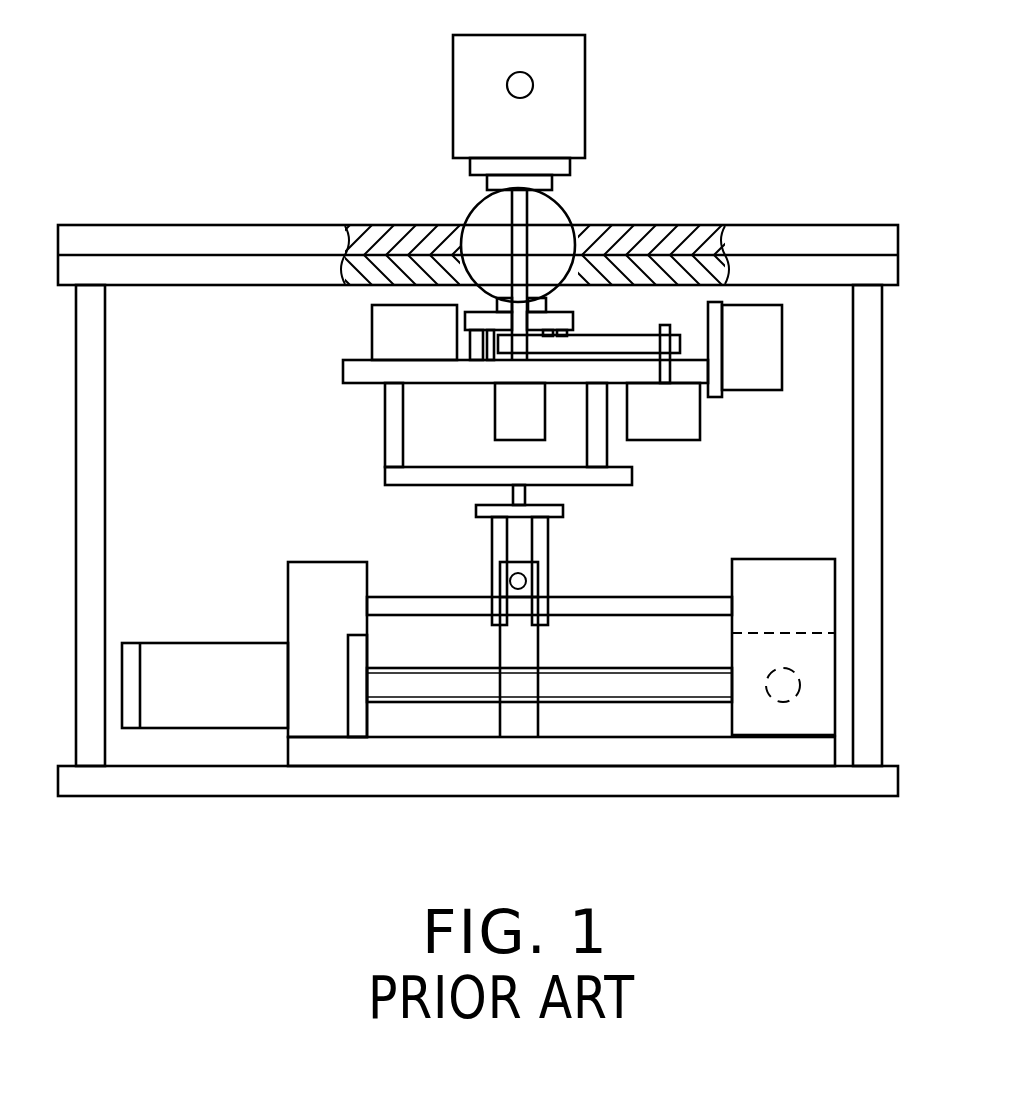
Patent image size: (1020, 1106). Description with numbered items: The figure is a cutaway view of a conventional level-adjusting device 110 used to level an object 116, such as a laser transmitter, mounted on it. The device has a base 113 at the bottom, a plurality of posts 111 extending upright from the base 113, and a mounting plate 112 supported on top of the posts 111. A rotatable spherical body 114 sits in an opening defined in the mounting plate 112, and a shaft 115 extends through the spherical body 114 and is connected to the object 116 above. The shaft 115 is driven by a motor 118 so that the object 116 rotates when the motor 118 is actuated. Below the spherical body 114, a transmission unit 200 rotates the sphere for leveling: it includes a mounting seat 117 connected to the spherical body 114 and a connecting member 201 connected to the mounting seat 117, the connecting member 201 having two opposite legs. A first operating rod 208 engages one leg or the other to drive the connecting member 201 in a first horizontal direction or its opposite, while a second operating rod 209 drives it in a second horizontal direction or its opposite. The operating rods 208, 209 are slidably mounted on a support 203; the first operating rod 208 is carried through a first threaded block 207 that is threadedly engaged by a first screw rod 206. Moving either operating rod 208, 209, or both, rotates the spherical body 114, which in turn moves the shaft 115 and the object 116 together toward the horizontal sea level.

The level-adjusting device 110 is at (228, 170).
The posts 111 is at (883, 300).
The mounting plate 112 is at (815, 225).
The base 113 is at (843, 785).
The spherical body 114 is at (567, 202).
The shaft 115 is at (518, 238).
The object 116 is at (462, 98).
The mounting seat 117 is at (607, 455).
The motor 118 is at (700, 415).
The transmission unit 200 is at (552, 543).
The connecting member 201 is at (478, 510).
The support 203 is at (628, 758).
The first screw rod 206 is at (224, 713).
The first threaded block 207 is at (515, 720).
The first operating rod 208 is at (527, 580).
The second operating rod 209 is at (697, 605).